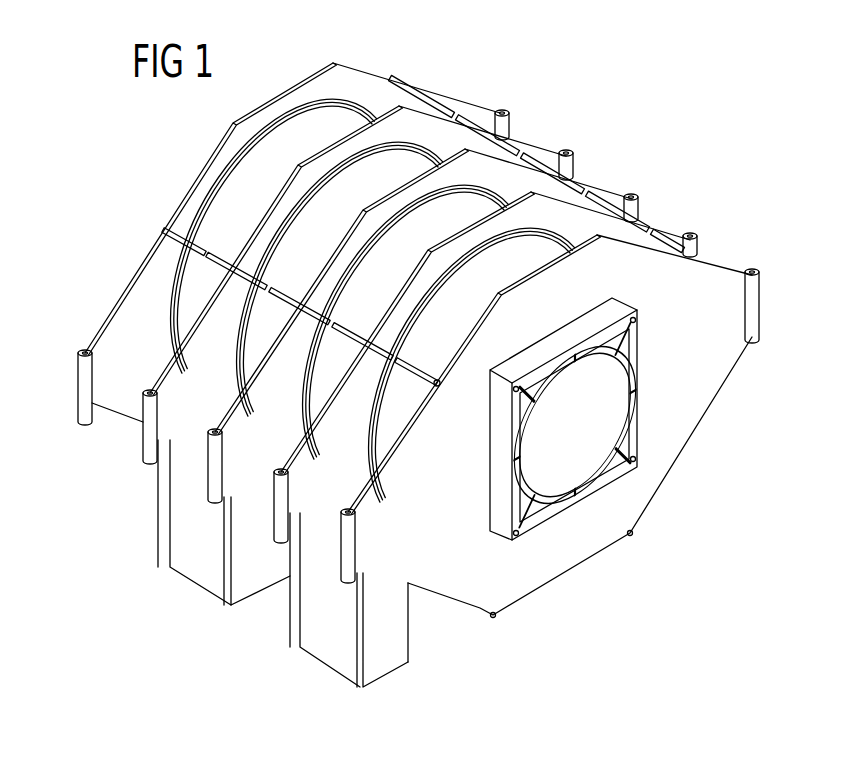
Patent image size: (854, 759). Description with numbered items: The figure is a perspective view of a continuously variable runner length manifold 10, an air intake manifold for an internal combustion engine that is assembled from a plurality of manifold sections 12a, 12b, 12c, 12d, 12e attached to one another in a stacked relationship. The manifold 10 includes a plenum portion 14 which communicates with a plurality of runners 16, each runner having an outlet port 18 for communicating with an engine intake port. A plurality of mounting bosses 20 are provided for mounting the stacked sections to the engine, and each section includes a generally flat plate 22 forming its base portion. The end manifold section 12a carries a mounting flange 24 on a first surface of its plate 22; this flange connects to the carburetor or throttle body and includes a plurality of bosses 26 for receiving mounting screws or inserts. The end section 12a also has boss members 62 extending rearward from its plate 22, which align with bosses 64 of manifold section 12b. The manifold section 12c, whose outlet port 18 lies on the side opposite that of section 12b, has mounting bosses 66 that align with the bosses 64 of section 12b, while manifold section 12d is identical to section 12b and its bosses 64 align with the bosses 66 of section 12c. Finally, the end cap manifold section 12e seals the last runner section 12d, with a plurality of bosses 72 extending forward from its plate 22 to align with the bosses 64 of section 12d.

The continuously variable runner length manifold 10 is at (145, 214).
The end manifold section 12a is at (716, 279).
The manifold section 12b is at (590, 215).
The manifold section 12c is at (507, 166).
The manifold section 12d is at (425, 126).
The end cap manifold section 12e is at (318, 92).
The plenum portion 14 is at (585, 422).
The runners 16 is at (342, 118).
The outlet port 18 is at (317, 615).
The mounting bosses 20 is at (500, 113).
The flat plate 22 is at (180, 373).
The mounting flange 24 is at (645, 348).
The bosses 26 is at (633, 316).
The boss members 62 is at (413, 367).
The bosses 64 is at (207, 247).
The mounting bosses 66 is at (280, 290).
The bosses 72 is at (165, 238).